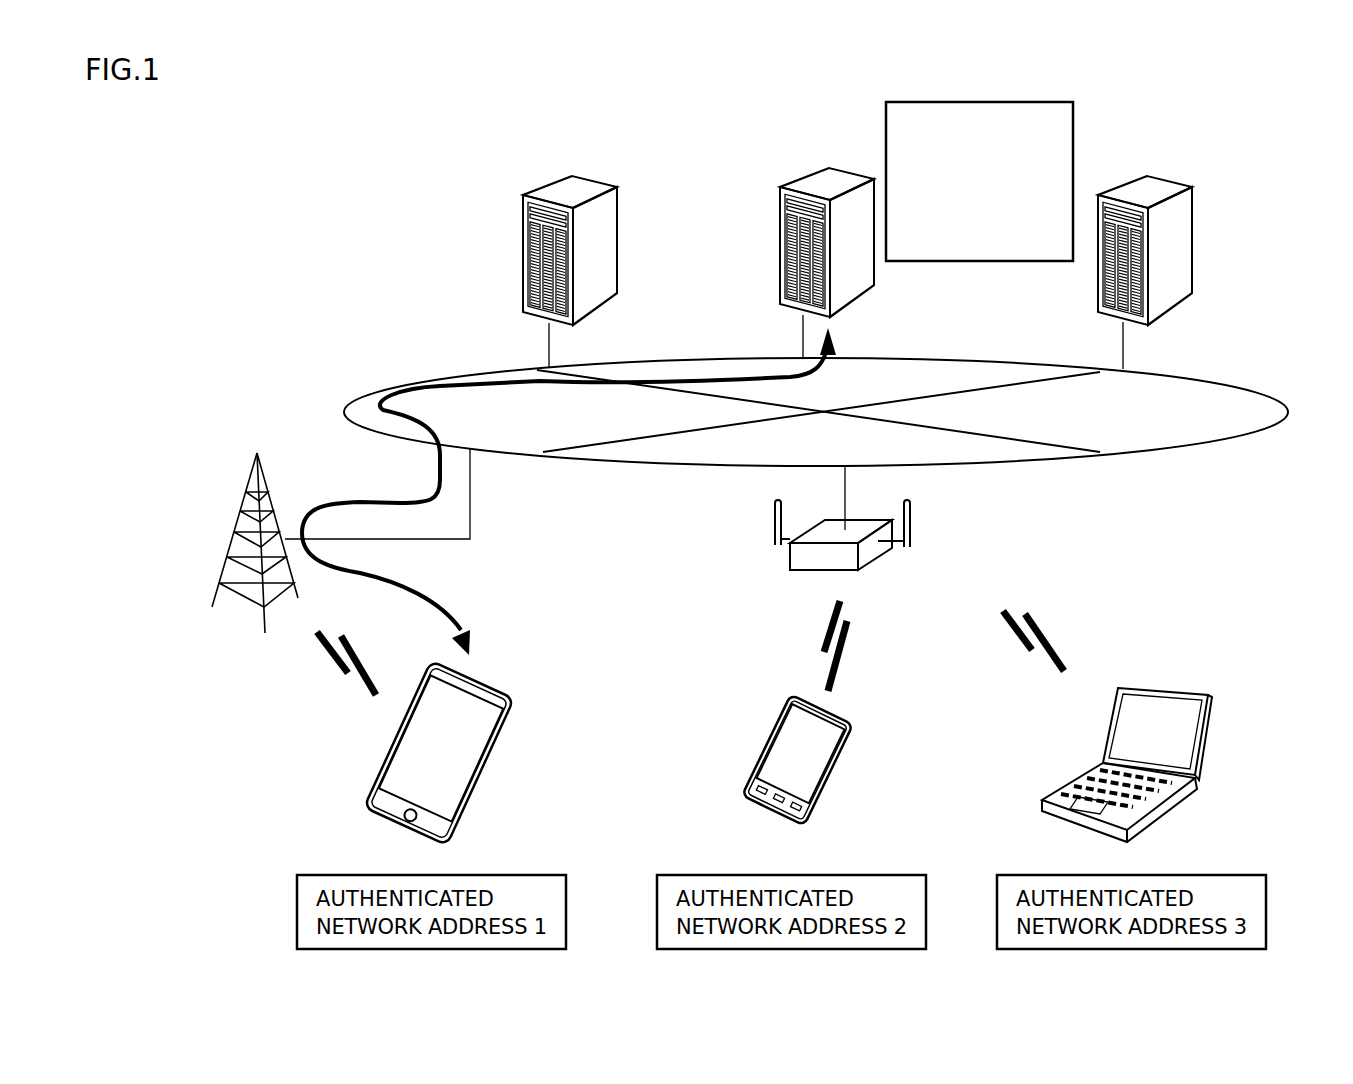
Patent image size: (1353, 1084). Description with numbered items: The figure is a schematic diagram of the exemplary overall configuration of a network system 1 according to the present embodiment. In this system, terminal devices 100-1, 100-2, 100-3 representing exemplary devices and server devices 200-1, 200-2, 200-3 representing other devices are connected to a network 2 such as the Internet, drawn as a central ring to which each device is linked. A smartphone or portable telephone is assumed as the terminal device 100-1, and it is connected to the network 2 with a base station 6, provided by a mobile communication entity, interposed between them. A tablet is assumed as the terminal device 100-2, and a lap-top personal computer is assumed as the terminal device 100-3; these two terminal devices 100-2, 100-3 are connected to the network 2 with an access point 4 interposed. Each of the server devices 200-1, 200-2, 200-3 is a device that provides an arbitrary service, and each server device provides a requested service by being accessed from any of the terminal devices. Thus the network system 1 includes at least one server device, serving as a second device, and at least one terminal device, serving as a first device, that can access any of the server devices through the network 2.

The network system 1 is at (1312, 82).
The network 2 is at (1220, 383).
The access point 4 is at (788, 556).
The base station 6 is at (248, 481).
The terminal device 100-1 is at (503, 738).
The terminal device 100-2 is at (847, 743).
The terminal device 100-3 is at (1203, 743).
The server device 200-1 is at (523, 235).
The server device 200-2 is at (780, 228).
The server device 200-3 is at (1192, 240).